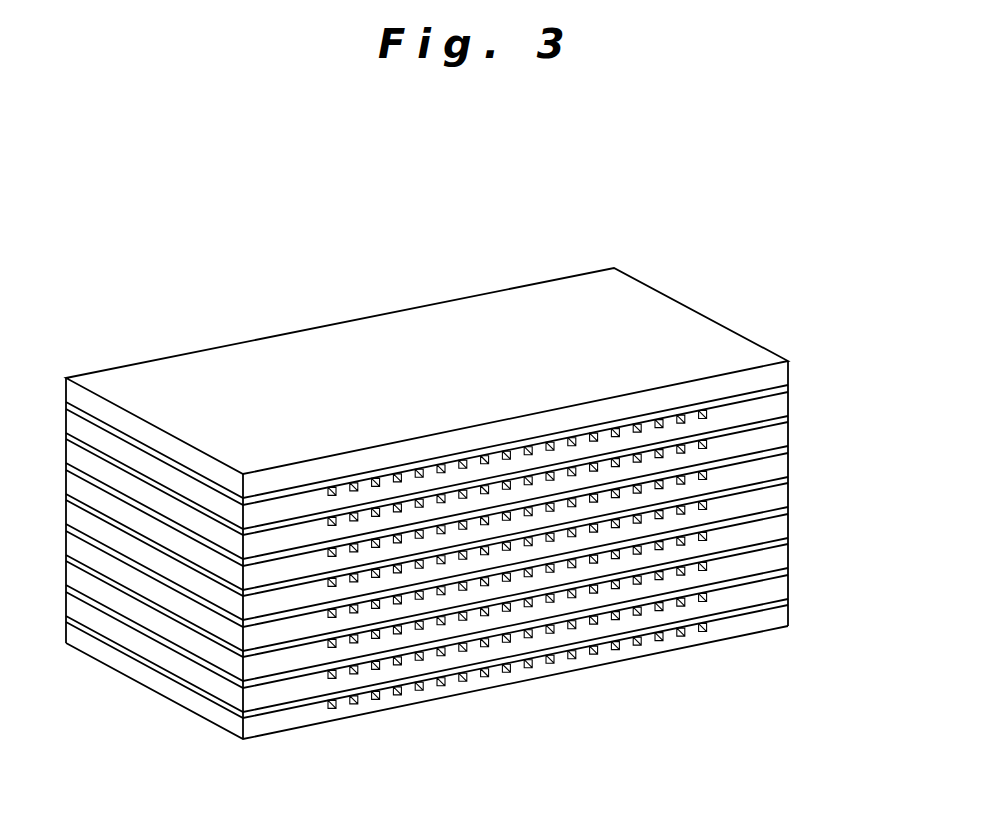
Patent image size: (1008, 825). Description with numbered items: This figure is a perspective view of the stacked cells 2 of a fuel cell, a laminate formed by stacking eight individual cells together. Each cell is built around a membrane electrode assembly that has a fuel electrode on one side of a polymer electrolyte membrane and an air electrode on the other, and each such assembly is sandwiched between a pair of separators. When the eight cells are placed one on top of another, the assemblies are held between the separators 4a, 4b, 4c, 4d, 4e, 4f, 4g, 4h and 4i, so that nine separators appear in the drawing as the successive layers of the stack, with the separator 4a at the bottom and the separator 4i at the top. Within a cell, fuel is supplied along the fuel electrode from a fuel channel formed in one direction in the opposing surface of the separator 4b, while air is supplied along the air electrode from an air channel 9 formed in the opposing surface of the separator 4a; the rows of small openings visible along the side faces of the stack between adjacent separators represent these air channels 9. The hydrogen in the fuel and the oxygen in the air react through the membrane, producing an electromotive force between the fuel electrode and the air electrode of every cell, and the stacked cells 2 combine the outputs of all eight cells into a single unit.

The stacked cells 2 is at (693, 267).
The separator 4a is at (780, 617).
The separator 4b is at (778, 587).
The separator 4c is at (778, 551).
The separator 4d is at (778, 521).
The separator 4e is at (778, 493).
The separator 4f is at (778, 462).
The separator 4g is at (778, 432).
The separator 4h is at (778, 402).
The separator 4i is at (778, 372).
The air channel 9 is at (548, 627).